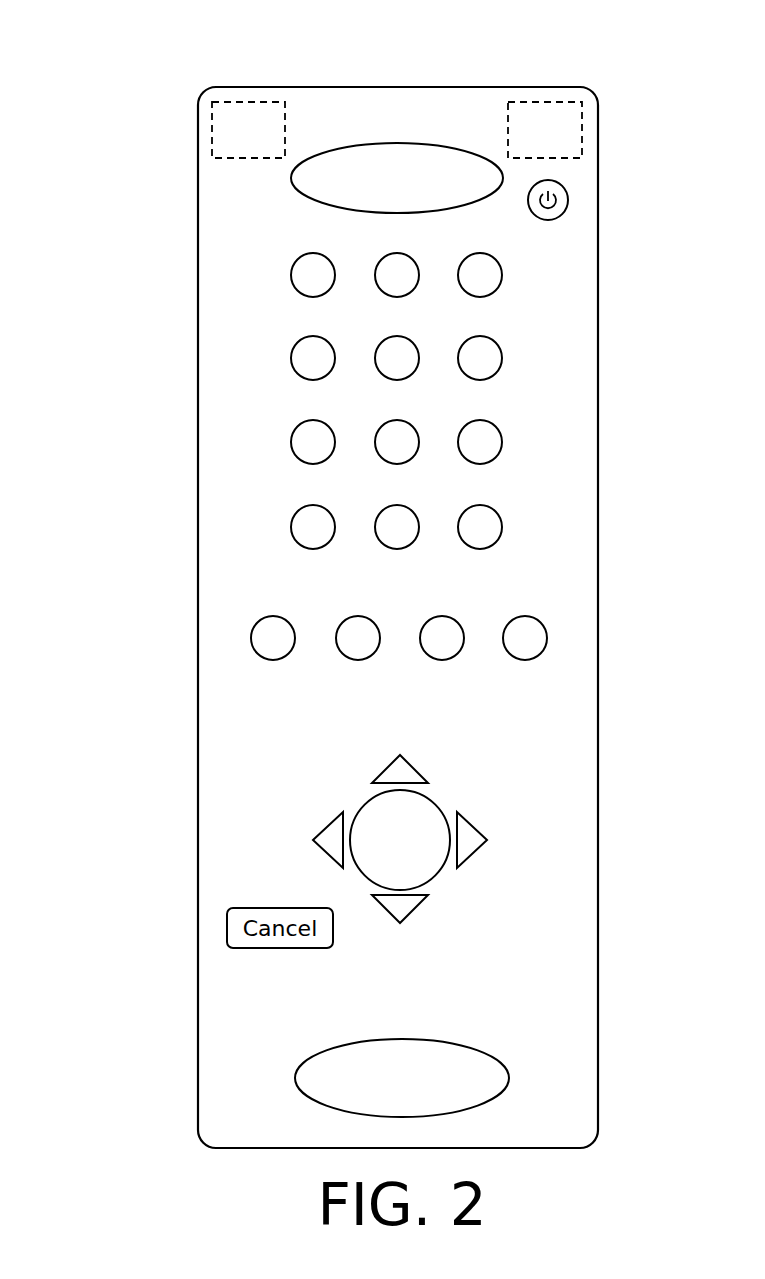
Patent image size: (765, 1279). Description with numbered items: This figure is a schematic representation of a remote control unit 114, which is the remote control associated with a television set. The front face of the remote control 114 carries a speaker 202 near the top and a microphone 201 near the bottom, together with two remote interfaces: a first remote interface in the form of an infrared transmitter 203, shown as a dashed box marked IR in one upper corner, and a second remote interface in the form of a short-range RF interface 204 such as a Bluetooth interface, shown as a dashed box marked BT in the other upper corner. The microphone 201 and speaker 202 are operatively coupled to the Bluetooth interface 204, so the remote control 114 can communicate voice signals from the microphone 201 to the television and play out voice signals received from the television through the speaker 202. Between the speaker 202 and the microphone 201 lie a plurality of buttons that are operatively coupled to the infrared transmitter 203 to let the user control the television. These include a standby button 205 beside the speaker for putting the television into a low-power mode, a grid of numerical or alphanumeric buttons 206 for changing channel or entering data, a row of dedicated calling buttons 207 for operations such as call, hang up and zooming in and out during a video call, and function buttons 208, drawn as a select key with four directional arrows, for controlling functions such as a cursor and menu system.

The remote control unit 114 is at (146, 233).
The microphone 201 is at (509, 1080).
The speaker 202 is at (402, 143).
The infrared transmitter 203 is at (551, 98).
The short-range RF interface 204 is at (253, 98).
The standby button 205 is at (568, 200).
The numerical or alphanumeric buttons 206 is at (605, 243).
The dedicated calling buttons 207 is at (605, 603).
The function buttons 208 is at (605, 753).